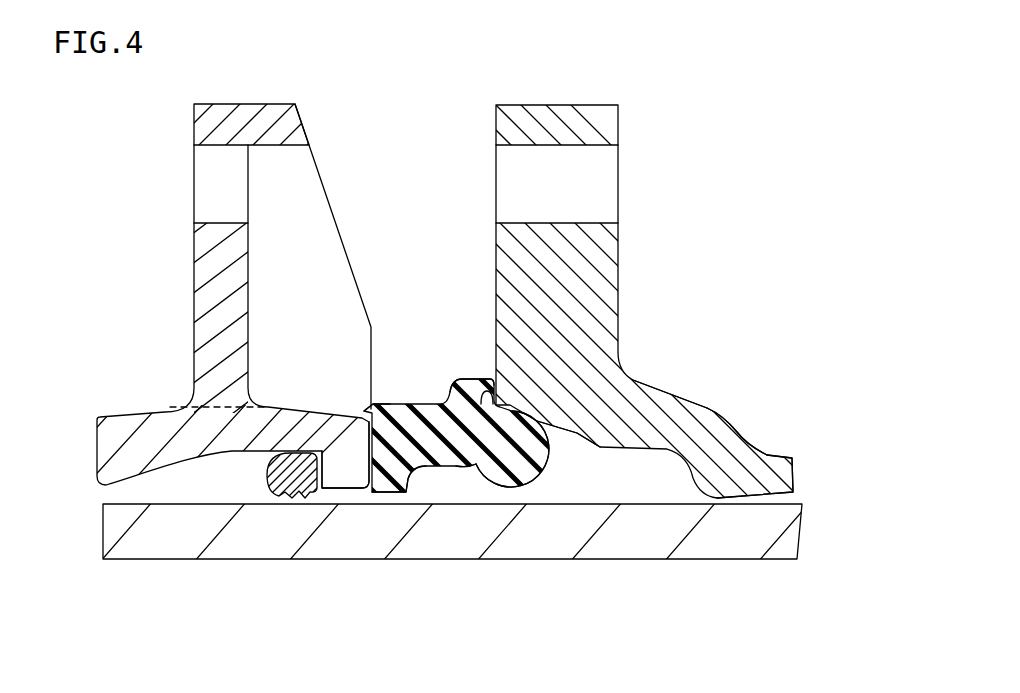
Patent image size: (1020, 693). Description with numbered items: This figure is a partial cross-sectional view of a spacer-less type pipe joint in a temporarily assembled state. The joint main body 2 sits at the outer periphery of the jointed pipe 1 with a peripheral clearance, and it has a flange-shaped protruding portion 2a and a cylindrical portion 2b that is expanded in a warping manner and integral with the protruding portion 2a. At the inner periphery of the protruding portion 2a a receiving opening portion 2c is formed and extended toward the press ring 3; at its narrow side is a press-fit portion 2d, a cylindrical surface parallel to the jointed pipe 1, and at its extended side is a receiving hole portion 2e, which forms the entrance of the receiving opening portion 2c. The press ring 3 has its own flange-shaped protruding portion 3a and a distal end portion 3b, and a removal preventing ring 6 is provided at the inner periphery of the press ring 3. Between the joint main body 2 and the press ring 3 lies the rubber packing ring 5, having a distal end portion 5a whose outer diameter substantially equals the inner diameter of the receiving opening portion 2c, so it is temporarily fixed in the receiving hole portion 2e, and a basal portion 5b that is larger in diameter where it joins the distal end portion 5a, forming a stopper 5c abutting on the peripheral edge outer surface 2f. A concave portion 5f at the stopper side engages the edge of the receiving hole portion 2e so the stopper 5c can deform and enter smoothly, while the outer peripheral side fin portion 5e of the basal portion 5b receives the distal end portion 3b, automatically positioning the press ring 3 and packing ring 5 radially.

The jointed pipe 1 is at (152, 545).
The joint main body 2 is at (691, 387).
The protruding portion 2a is at (613, 131).
The cylindrical portion 2b is at (782, 467).
The receiving opening portion 2c is at (597, 440).
The press-fit portion 2d is at (653, 445).
The receiving hole portion 2e is at (500, 404).
The peripheral edge outer surface 2f is at (487, 390).
The press ring 3 is at (206, 301).
The protruding portion 3a is at (293, 123).
The distal end portion 3b is at (360, 452).
The rubber packing ring 5 is at (399, 400).
The distal end portion 5a is at (527, 470).
The basal portion 5b is at (435, 454).
The stopper 5c is at (456, 398).
The outer peripheral side fin portion 5e is at (364, 411).
The concave portion 5f is at (490, 470).
The removal preventing ring 6 is at (300, 494).